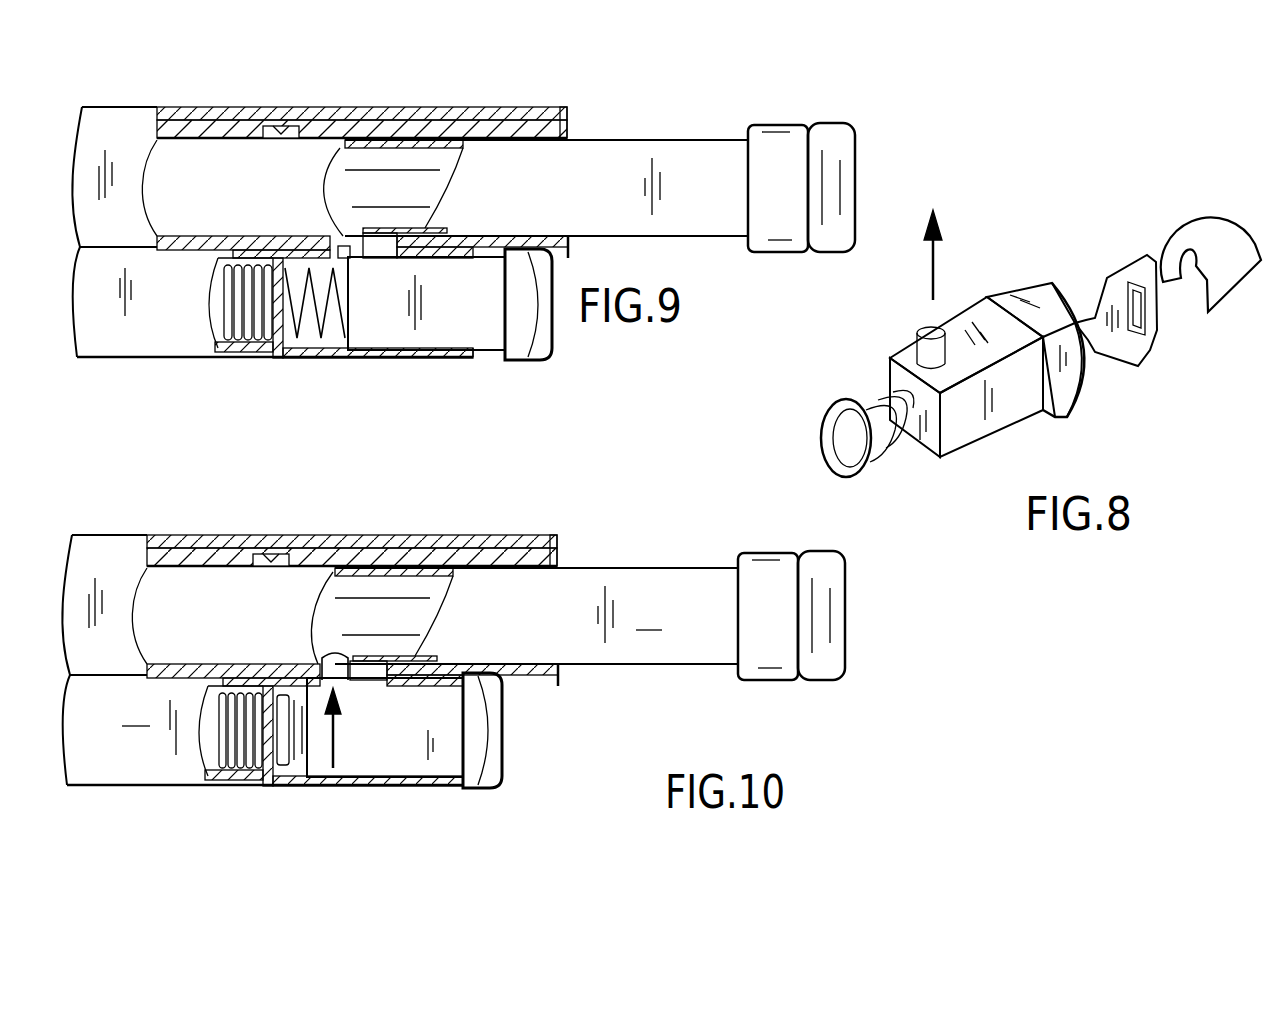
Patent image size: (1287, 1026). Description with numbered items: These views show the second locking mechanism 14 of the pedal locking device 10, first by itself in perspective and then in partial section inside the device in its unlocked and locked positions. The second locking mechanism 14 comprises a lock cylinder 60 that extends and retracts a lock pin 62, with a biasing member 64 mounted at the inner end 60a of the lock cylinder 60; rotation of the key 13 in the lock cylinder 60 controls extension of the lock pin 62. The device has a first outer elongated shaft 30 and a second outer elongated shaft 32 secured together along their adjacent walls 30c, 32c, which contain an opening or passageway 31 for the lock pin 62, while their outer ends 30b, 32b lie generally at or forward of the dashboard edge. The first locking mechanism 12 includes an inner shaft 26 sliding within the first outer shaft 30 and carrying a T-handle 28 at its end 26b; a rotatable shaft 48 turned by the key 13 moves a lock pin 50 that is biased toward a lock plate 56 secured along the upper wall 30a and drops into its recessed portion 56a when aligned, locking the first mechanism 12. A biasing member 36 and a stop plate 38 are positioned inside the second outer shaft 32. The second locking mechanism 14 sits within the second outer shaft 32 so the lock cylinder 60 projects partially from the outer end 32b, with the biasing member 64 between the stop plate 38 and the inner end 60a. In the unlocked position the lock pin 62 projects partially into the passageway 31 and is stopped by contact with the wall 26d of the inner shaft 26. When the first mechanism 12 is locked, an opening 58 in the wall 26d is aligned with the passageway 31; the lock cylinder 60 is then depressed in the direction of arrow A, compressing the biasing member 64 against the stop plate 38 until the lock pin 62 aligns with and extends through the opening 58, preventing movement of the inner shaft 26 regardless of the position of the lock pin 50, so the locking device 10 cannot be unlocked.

In FIG. 9, the pedal locking device 10 is at (612, 105).
In FIG. 10, the pedal locking device 10 is at (605, 537).
In FIG. 9, the first locking mechanism 12 is at (812, 108).
In FIG. 10, the first locking mechanism 12 is at (676, 548).
In FIG. 8, the key 13 is at (1128, 362).
In FIG. 9, the second locking mechanism 14 is at (556, 338).
In FIG. 8, the second locking mechanism 14 is at (1040, 258).
In FIG. 10, the second locking mechanism 14 is at (535, 758).
In FIG. 9, the inner shaft 26 is at (672, 132).
In FIG. 10, the inner shaft 26 is at (524, 616).
In FIG. 9, the end of inner shaft 26b is at (730, 225).
In FIG. 10, the end of inner shaft 26b is at (722, 655).
In FIG. 9, the wall of inner shaft 26d is at (418, 206).
In FIG. 10, the wall of inner shaft 26d is at (400, 622).
In FIG. 9, the T-handle 28 is at (855, 172).
In FIG. 10, the T-handle 28 is at (848, 602).
In FIG. 9, the first outer elongated shaft 30 is at (128, 130).
In FIG. 10, the first outer elongated shaft 30 is at (112, 552).
In FIG. 9, the upper wall of outer shaft 30a is at (487, 114).
In FIG. 10, the upper wall of outer shaft 30a is at (470, 538).
In FIG. 9, the outer end of outer shaft 30b is at (567, 114).
In FIG. 10, the outer end of outer shaft 30b is at (557, 540).
In FIG. 9, the adjacent wall of outer shaft 30c is at (510, 236).
In FIG. 10, the adjacent wall of outer shaft 30c is at (500, 664).
In FIG. 9, the opening or passageway 31 is at (343, 252).
In FIG. 10, the opening or passageway 31 is at (372, 674).
In FIG. 9, the second outer elongated shaft 32 is at (136, 332).
In FIG. 10, the second outer elongated shaft 32 is at (263, 730).
In FIG. 9, the outer end of second outer shaft 32b is at (477, 358).
In FIG. 10, the outer end of second outer shaft 32b is at (457, 788).
In FIG. 9, the adjacent wall of second outer shaft 32c is at (435, 252).
In FIG. 10, the adjacent wall of second outer shaft 32c is at (495, 690).
In FIG. 9, the biasing member 36 is at (228, 322).
In FIG. 10, the biasing member 36 is at (224, 745).
In FIG. 9, the stop plate 38 is at (275, 360).
In FIG. 10, the stop plate 38 is at (240, 788).
In FIG. 9, the rotatable shaft 48 is at (415, 182).
In FIG. 10, the rotatable shaft 48 is at (338, 610).
In FIG. 9, the lock pin 50 is at (278, 140).
In FIG. 10, the lock pin 50 is at (243, 563).
In FIG. 9, the lock plate 56 is at (400, 122).
In FIG. 10, the lock plate 56 is at (388, 555).
In FIG. 9, the notched or recessed portion 56a is at (287, 130).
In FIG. 10, the notched or recessed portion 56a is at (280, 560).
In FIG. 9, the opening in inner shaft 58 is at (347, 228).
In FIG. 10, the opening in inner shaft 58 is at (332, 662).
In FIG. 9, the lock cylinder 60 is at (447, 330).
In FIG. 8, the lock cylinder 60 is at (1072, 412).
In FIG. 10, the lock cylinder 60 is at (516, 778).
In FIG. 9, the inner end of lock cylinder 60a is at (360, 335).
In FIG. 8, the inner end of lock cylinder 60a is at (930, 452).
In FIG. 10, the inner end of lock cylinder 60a is at (312, 778).
In FIG. 9, the lock pin 62 is at (344, 252).
In FIG. 8, the lock pin 62 is at (917, 335).
In FIG. 10, the lock pin 62 is at (338, 678).
In FIG. 9, the biasing member 64 is at (315, 340).
In FIG. 8, the biasing member 64 is at (855, 477).
In FIG. 10, the biasing member 64 is at (288, 778).
In FIG. 10, the direction of arrow A is at (591, 723).